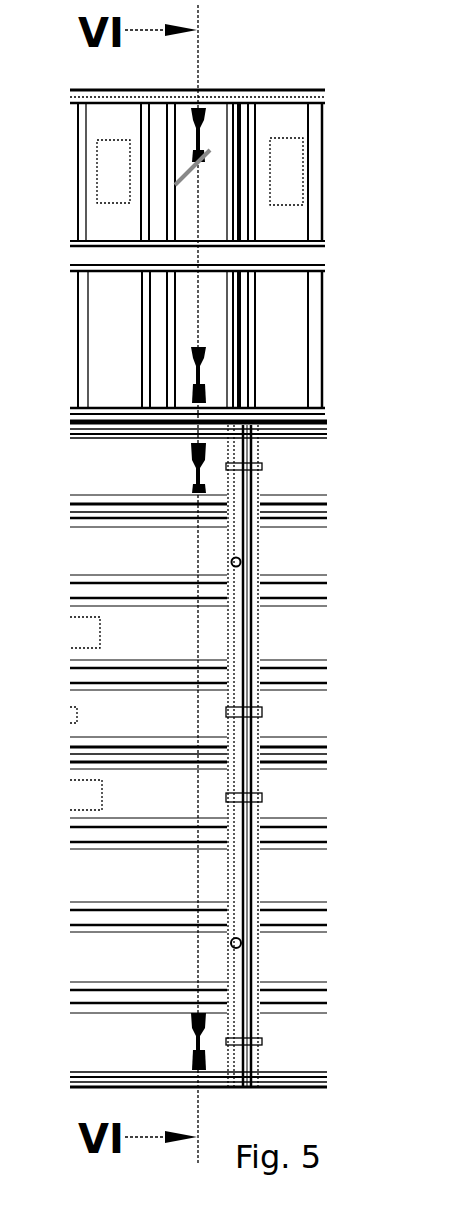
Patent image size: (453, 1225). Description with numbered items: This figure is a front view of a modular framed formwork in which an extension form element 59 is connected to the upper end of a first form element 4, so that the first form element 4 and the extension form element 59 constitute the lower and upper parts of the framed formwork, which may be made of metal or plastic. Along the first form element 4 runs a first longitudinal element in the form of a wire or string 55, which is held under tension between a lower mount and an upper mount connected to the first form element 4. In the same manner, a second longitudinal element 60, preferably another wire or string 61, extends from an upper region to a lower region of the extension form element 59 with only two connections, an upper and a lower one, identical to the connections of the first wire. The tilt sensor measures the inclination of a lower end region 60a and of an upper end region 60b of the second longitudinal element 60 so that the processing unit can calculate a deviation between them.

The first form element 4 is at (63, 713).
The wire or string 55 is at (281, 756).
The extension form element 59 is at (352, 249).
The second longitudinal element 60 is at (199, 126).
The lower end region of the second longitudinal element 60a is at (300, 337).
The upper end region of the second longitudinal element 60b is at (146, 121).
The wire or string 61 is at (359, 232).